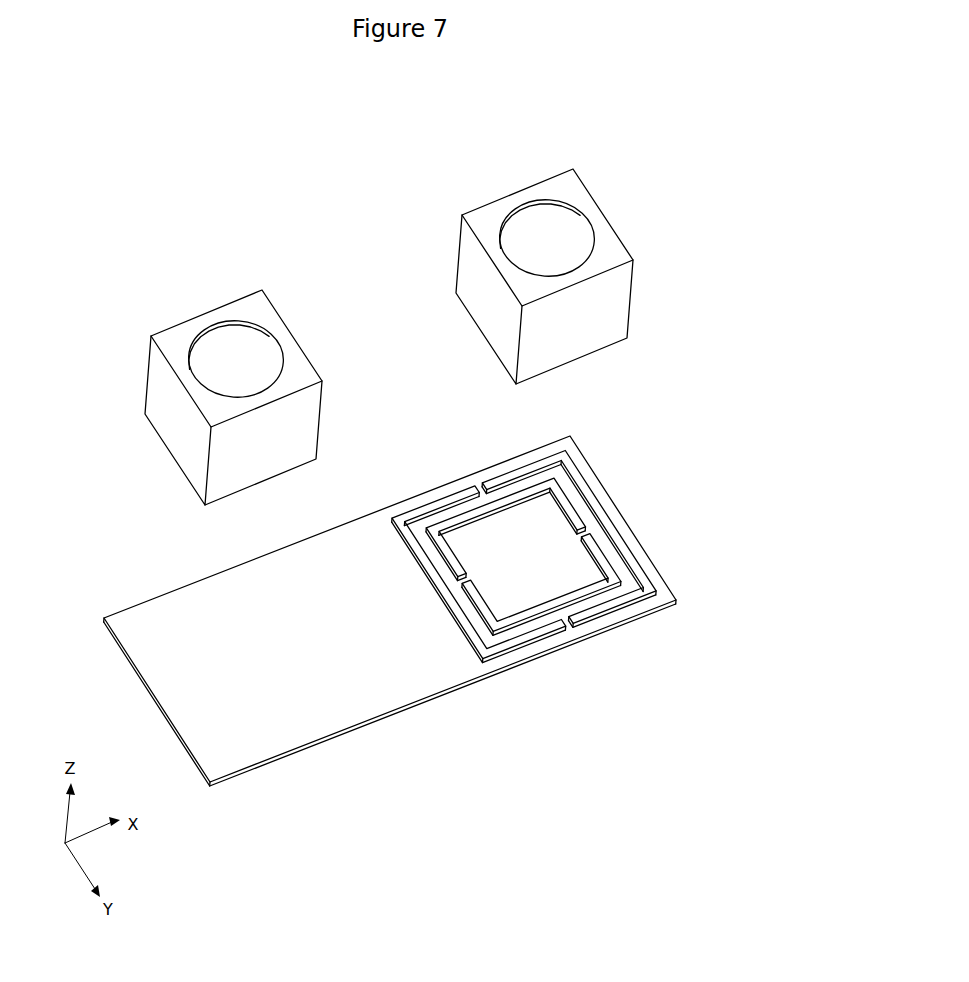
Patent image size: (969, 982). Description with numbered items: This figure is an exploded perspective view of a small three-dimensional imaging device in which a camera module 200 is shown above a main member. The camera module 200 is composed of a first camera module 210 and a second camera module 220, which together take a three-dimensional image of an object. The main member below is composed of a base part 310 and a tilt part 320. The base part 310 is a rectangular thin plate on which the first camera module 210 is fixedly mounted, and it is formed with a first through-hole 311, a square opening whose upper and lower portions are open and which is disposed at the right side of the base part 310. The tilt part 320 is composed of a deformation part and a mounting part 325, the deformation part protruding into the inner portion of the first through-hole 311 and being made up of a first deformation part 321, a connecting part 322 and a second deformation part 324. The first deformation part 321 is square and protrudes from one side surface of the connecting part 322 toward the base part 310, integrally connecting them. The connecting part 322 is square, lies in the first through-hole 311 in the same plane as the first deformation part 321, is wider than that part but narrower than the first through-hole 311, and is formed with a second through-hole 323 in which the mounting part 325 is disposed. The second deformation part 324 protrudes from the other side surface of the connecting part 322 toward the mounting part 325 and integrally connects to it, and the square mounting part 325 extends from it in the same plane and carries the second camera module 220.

The camera module 200 is at (389, 299).
The first camera module 210 is at (232, 365).
The second camera module 220 is at (545, 233).
The base part 310 is at (265, 717).
The first through-hole 311 is at (568, 455).
The tilt part 320 is at (568, 580).
The first deformation part 321 is at (578, 620).
The connecting part 322 is at (502, 637).
The second through-hole 323 is at (572, 497).
The second deformation part 324 is at (583, 528).
The mounting part 325 is at (562, 577).